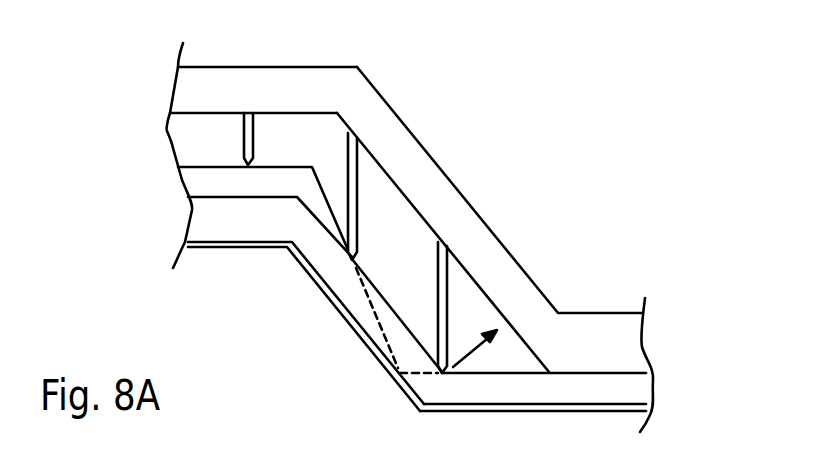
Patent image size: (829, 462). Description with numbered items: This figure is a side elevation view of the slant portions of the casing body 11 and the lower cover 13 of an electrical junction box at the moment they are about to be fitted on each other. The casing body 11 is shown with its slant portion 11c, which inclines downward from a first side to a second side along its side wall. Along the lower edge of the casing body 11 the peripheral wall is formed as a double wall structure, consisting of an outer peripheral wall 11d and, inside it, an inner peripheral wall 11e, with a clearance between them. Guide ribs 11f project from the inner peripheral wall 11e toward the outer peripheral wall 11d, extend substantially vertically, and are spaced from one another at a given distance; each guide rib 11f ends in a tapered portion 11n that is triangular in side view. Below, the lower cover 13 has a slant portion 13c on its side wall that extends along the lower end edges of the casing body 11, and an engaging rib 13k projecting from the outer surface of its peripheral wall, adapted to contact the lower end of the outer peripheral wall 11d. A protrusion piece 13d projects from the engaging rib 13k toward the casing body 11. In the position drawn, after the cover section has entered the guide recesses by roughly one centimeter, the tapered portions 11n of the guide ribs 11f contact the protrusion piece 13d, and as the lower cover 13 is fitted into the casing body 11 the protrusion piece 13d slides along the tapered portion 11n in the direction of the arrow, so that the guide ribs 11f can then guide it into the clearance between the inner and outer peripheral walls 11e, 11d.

The casing body 11 is at (198, 56).
The slant portion 11c is at (457, 187).
The outer peripheral wall 11d is at (415, 155).
The inner peripheral wall 11e is at (303, 125).
The guide rib 11f is at (255, 115).
The tapered portion 11n is at (350, 255).
The lower cover 13 is at (360, 260).
The slant portion 13c is at (390, 310).
The protrusion piece 13d is at (612, 382).
The engaging rib 13k is at (622, 412).